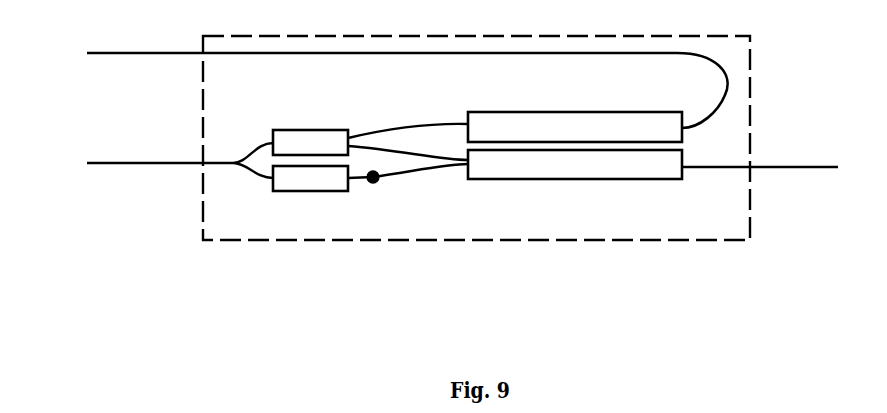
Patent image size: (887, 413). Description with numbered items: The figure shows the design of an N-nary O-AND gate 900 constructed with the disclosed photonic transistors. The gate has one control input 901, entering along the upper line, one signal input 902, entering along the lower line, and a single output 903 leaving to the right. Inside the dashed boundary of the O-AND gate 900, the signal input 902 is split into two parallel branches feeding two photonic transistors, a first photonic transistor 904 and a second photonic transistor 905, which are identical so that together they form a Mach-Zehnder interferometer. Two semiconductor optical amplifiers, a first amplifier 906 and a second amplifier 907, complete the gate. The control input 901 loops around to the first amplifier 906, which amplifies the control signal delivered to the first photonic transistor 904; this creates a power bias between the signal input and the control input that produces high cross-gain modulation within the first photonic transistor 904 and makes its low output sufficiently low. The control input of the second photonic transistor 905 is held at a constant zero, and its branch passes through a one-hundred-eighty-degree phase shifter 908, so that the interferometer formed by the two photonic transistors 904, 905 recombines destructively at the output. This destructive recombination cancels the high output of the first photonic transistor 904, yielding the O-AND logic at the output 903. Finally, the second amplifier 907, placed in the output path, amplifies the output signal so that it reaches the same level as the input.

The N-nary O-AND gate 900 is at (442, 241).
The control input 901 is at (105, 55).
The signal input 902 is at (122, 165).
The output 903 is at (793, 168).
The PT-1 904 is at (310, 130).
The PT-2 905 is at (297, 192).
The SOA-1 906 is at (538, 112).
The SOA-2 907 is at (550, 180).
The 180° phase shifter 908 is at (383, 182).